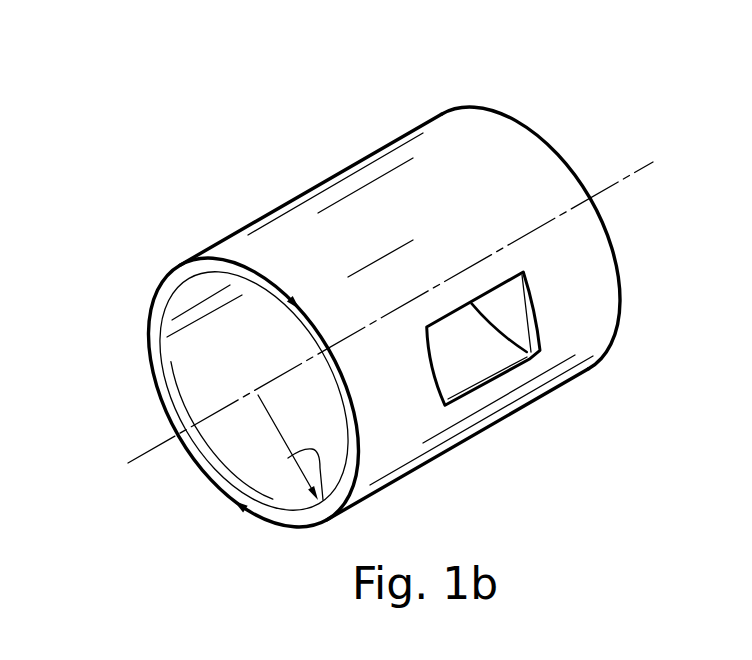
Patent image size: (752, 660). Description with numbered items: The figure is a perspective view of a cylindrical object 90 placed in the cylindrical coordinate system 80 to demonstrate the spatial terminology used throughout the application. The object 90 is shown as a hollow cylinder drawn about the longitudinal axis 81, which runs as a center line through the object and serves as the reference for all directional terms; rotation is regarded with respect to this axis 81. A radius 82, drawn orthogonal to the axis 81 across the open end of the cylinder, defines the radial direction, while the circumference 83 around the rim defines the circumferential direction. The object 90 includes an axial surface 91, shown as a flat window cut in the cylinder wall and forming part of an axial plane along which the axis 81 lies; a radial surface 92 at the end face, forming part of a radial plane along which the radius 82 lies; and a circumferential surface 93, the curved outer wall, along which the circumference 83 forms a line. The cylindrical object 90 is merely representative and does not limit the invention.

The cylindrical coordinate system 80 is at (564, 106).
The longitudinal axis 81 is at (138, 459).
The radius 82 is at (346, 500).
The circumference 83 is at (157, 289).
The cylindrical object 90 is at (417, 96).
The axial surface 91 is at (507, 362).
The radial surface 92 is at (268, 519).
The circumferential surface 93 is at (363, 207).